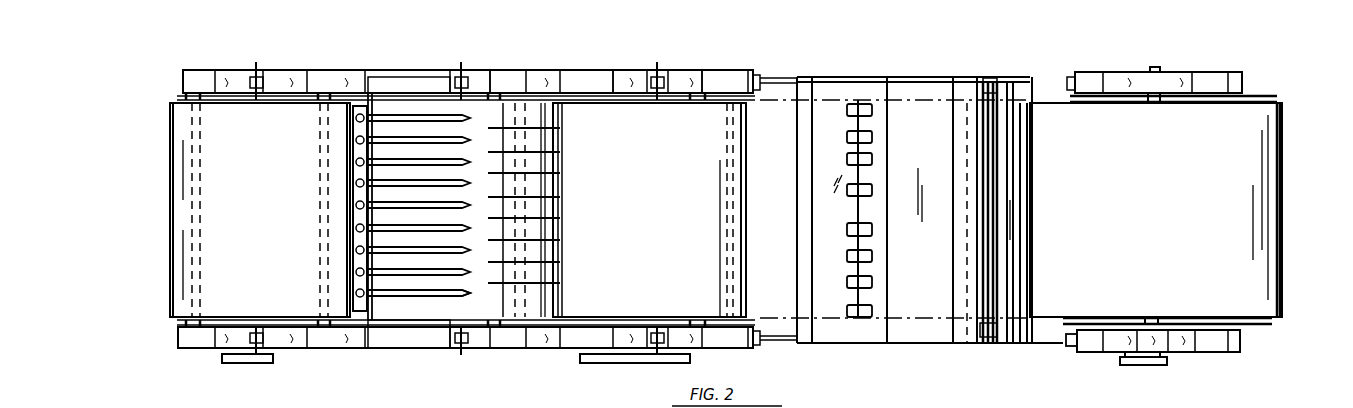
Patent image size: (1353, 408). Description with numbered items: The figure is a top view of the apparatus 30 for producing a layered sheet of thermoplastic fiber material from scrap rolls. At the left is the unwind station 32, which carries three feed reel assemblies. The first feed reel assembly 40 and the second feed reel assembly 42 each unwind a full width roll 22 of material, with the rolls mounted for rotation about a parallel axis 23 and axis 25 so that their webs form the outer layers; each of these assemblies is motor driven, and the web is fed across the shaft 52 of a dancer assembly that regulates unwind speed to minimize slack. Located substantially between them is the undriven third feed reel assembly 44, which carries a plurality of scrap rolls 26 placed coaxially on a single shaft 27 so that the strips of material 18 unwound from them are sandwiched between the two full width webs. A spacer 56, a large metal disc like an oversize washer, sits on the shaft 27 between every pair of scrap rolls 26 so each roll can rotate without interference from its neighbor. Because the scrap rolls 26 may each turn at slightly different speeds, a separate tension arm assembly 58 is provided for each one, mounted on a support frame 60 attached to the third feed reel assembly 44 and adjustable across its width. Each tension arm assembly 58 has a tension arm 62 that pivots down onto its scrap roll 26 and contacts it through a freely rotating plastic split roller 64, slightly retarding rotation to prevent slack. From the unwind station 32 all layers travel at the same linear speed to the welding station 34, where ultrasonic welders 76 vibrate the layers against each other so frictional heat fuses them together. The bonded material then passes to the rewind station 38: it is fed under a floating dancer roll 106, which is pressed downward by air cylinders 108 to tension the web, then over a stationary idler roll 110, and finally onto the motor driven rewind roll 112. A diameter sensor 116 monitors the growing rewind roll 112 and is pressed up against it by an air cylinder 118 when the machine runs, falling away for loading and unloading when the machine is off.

The strips of material 18 is at (540, 150).
The full width roll 22 is at (242, 215).
The axis 23 is at (259, 64).
The axis 25 is at (657, 62).
The scrap rolls 26 is at (488, 100).
The single axis (shaft) 27 is at (465, 68).
The apparatus 30 is at (930, 42).
The unwind station 32 is at (541, 364).
The welding station 34 is at (882, 343).
The rewind station 38 is at (1140, 366).
The first feed reel assembly 40 is at (328, 44).
The second feed reel assembly 42 is at (707, 40).
The third feed reel assembly 44 is at (457, 51).
The shaft 52 is at (318, 242).
The spacer 56 is at (560, 128).
The tension arm assembly 58 is at (352, 160).
The support frame 60 is at (382, 68).
The tension arm 62 is at (402, 115).
The plastic split roller 64 is at (470, 292).
The ultrasonic welders 76 is at (847, 158).
The floating dancer roll 106 is at (985, 120).
The air cylinders 108 is at (993, 78).
The stationary idler roll 110 is at (1010, 89).
The rewind roll 112 is at (1270, 220).
The diameter sensor 116 is at (1271, 324).
The air cylinder 118 is at (1067, 342).